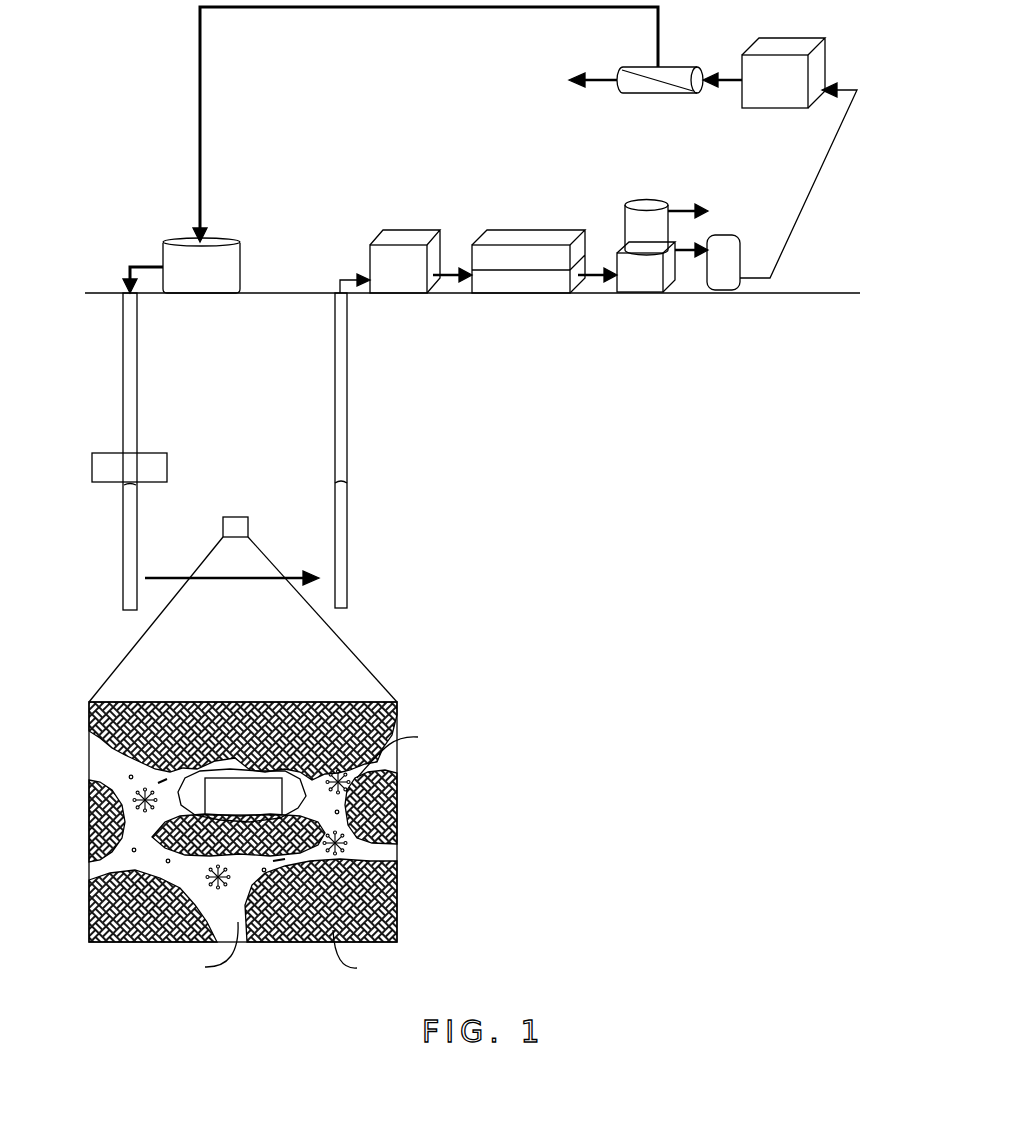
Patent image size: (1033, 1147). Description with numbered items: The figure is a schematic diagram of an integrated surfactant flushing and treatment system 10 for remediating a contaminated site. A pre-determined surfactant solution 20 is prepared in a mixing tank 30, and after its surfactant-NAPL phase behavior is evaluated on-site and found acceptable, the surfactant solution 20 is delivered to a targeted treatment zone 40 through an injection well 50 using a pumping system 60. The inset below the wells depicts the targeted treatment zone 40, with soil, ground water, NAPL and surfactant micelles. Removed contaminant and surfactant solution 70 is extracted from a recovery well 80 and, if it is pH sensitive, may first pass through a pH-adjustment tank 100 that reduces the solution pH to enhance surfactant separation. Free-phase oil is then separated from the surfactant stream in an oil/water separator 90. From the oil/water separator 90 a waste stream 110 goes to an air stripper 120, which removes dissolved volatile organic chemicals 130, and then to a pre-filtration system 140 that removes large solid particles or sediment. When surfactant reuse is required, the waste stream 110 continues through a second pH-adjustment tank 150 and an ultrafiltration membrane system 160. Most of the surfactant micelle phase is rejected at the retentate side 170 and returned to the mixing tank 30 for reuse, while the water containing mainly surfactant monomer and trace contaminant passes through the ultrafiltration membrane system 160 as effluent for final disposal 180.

The integrated surfactant flushing and treatment system 10 is at (143, 77).
The surfactant solution 20 is at (178, 228).
The mixing tank 30 is at (163, 246).
The targeted treatment zone 40 is at (245, 515).
The injection well 50 is at (123, 575).
The pumping system 60 is at (160, 452).
The removed contaminant and surfactant solution 70 is at (350, 512).
The recovery well 80 is at (347, 580).
The oil/water separator 90 is at (510, 230).
The pH-adjustment tank 100 is at (408, 232).
The waste stream 110 is at (593, 297).
The air stripper 120 is at (716, 158).
The volatile organic chemicals 130 is at (740, 199).
The pre-filtration system 140 is at (723, 282).
The second pH-adjustment tank 150 is at (793, 45).
The ultrafiltration membrane system 160 is at (618, 88).
The retentate side 170 is at (683, 72).
The final disposal 180 is at (502, 57).